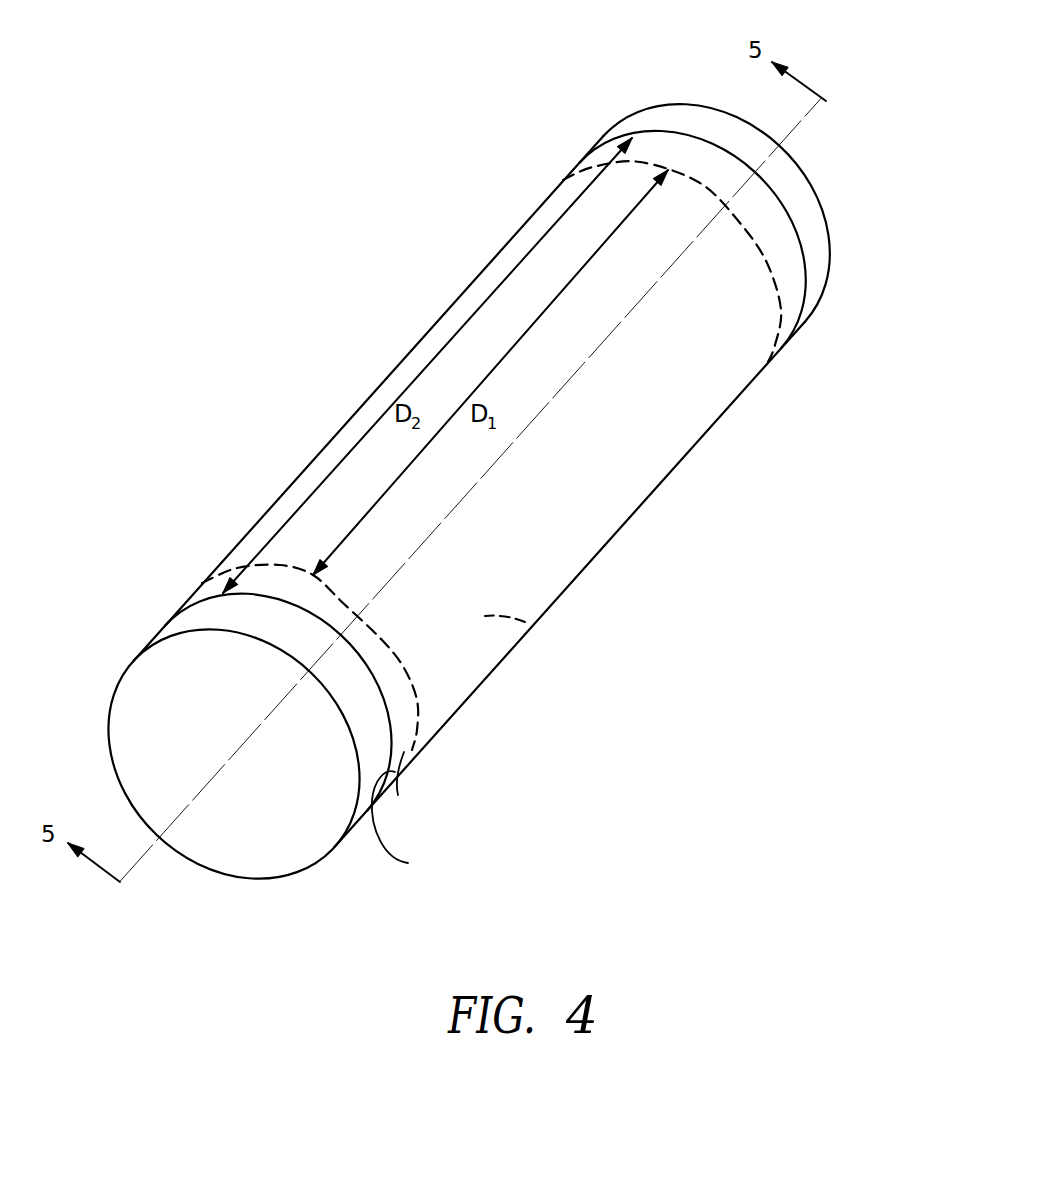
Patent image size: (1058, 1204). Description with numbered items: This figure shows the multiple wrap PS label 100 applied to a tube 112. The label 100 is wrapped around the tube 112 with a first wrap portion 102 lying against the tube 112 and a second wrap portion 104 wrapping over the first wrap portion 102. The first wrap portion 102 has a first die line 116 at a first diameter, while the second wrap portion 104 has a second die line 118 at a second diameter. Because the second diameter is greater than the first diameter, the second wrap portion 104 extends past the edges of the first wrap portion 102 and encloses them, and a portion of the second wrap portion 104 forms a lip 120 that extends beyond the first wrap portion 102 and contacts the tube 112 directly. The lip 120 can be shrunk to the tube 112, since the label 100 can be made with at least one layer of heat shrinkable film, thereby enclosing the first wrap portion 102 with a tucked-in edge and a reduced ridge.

The multiple wrap PS label 100 is at (683, 458).
The first wrap portion 102 is at (525, 622).
The second wrap portion 104 is at (398, 795).
The tube 112 is at (815, 233).
The first die line 116 is at (417, 730).
The second die line 118 is at (408, 863).
The lip 120 is at (779, 337).